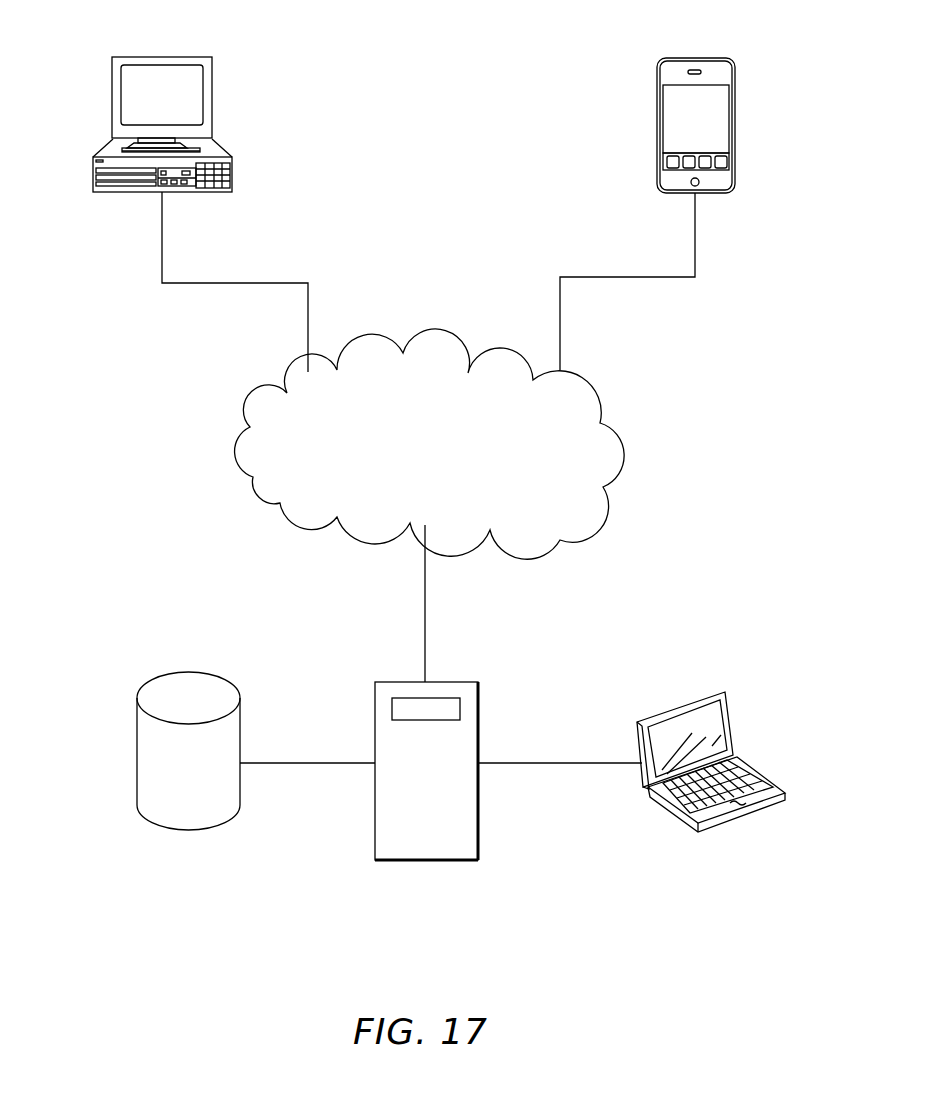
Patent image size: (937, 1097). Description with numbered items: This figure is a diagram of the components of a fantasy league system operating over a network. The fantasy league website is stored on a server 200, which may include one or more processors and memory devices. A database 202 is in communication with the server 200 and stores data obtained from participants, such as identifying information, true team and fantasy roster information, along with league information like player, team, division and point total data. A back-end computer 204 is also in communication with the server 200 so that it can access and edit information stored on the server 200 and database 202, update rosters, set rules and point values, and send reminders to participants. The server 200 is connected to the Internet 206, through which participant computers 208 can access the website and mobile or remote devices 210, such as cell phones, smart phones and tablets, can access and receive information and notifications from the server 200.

The server 200 is at (390, 682).
The database 202 is at (150, 680).
The back-end computer 204 is at (667, 712).
The Internet 206 is at (595, 386).
The participant computer 208 is at (112, 123).
The mobile or remote device 210 is at (735, 131).